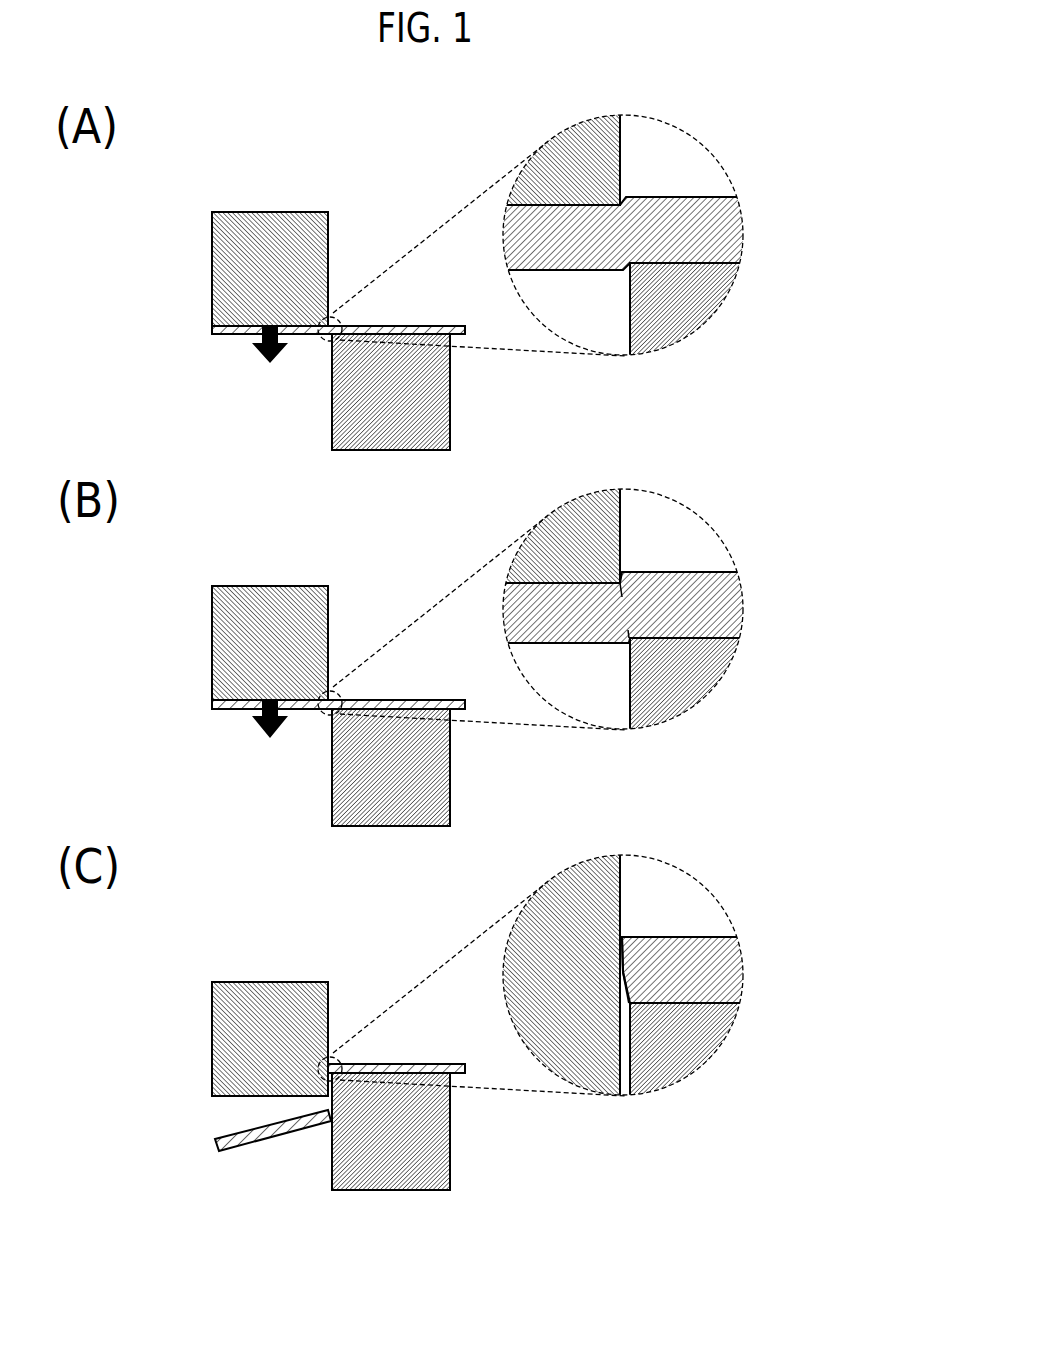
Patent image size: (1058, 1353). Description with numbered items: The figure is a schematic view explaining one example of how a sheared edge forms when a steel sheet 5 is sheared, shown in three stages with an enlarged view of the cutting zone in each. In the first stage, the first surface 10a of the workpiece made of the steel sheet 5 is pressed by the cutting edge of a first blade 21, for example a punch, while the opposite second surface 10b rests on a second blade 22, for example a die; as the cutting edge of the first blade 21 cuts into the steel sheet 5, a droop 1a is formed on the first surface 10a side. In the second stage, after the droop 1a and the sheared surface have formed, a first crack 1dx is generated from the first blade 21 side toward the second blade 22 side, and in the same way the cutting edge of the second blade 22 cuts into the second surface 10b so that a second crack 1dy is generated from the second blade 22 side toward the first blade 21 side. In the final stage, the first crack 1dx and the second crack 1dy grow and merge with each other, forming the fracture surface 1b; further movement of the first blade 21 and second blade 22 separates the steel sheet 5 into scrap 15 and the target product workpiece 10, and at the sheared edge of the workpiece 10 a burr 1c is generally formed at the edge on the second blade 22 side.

The steel sheet 5 is at (427, 325).
The workpiece 10 is at (431, 1064).
The first surface 10a is at (713, 193).
The second surface 10b is at (718, 268).
The droop 1a is at (623, 191).
The fracture surface 1b is at (618, 973).
The burr 1c is at (624, 1009).
The first crack 1dx is at (625, 586).
The second crack 1dy is at (631, 633).
The scrap 15 is at (237, 1148).
The first blade 21 is at (230, 256).
The second blade 22 is at (449, 398).